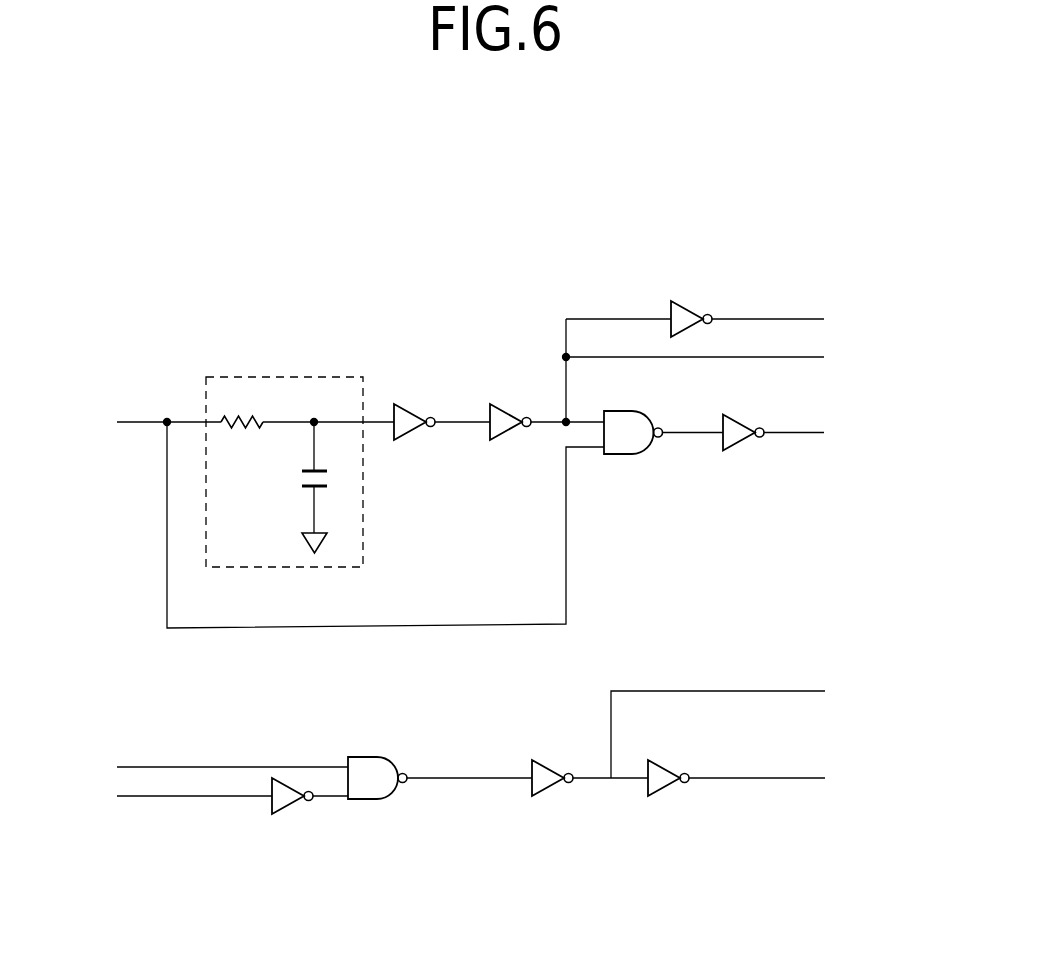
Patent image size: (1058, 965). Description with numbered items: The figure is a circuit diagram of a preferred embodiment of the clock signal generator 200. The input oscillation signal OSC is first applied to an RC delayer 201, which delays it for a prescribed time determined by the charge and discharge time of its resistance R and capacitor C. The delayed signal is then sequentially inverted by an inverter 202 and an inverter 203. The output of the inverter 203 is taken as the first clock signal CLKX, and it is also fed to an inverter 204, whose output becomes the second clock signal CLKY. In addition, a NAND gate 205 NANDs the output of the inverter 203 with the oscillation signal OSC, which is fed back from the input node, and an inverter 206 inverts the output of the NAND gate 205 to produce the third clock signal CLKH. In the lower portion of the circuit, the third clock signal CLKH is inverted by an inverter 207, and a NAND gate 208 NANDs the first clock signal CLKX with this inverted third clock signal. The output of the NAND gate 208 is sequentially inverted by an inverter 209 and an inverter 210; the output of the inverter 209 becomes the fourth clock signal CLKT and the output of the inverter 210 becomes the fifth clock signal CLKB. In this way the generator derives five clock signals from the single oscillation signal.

The clock signal generator 200 is at (827, 238).
The RC delayer 201 is at (284, 377).
The inverter 202 is at (411, 403).
The inverter 203 is at (507, 403).
The inverter 204 is at (687, 302).
The NAND gate 205 is at (666, 394).
The inverter 206 is at (738, 414).
The inverter 207 is at (289, 808).
The NAND gate 208 is at (396, 757).
The inverter 209 is at (549, 760).
The inverter 210 is at (666, 760).